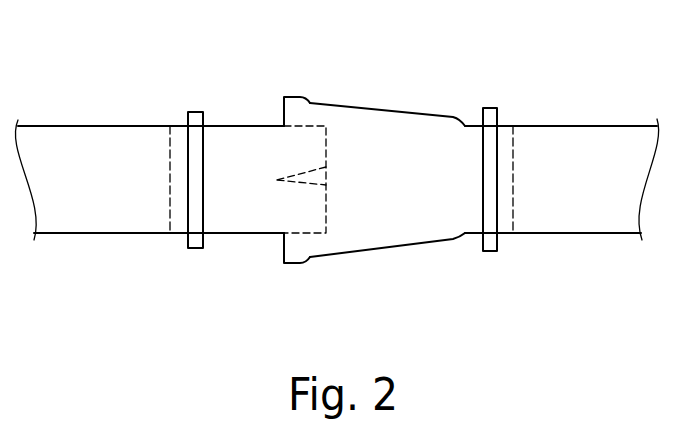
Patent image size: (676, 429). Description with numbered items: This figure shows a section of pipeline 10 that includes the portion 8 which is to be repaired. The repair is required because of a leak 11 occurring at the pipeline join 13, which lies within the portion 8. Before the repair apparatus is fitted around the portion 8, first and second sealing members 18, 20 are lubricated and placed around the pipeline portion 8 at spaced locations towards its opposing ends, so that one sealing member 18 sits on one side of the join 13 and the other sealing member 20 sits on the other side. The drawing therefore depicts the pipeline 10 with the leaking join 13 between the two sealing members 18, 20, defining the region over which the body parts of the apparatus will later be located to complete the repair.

The pipeline 10 is at (68, 132).
The first sealing member 18 is at (200, 117).
The pipeline join 13 is at (283, 125).
The leak 11 is at (314, 188).
The portion of pipeline 8 is at (407, 123).
The second sealing member 20 is at (488, 115).